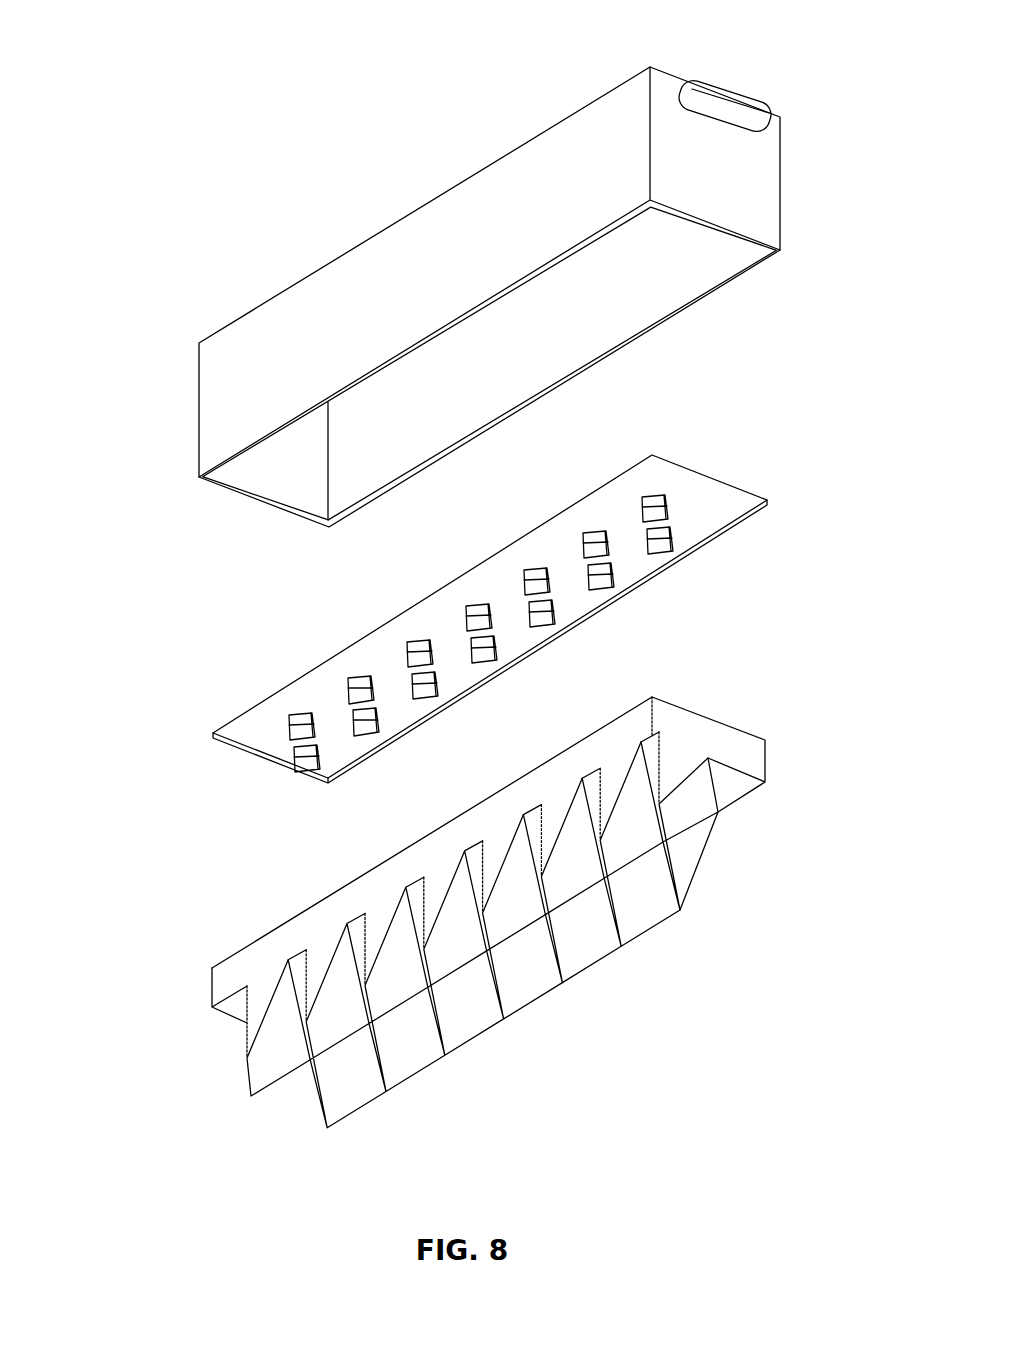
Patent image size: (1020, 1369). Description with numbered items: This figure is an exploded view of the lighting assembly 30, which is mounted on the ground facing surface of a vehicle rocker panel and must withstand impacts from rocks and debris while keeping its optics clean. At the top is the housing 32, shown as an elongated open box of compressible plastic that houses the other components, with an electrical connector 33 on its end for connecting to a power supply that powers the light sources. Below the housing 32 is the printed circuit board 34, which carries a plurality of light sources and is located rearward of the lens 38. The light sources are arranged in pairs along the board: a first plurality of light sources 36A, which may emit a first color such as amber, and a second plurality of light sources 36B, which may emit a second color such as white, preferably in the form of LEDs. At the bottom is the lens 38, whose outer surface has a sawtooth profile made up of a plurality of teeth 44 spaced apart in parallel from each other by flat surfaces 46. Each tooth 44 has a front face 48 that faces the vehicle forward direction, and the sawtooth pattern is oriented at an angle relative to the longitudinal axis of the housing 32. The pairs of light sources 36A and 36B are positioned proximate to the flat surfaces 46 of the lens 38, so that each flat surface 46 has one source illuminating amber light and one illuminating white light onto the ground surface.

The lighting assembly 30 is at (163, 247).
The housing 32 is at (750, 177).
The electrical connector 33 is at (727, 98).
The printed circuit board 34 is at (723, 490).
The first plurality of light sources 36A is at (487, 657).
The second plurality of light sources 36B is at (477, 608).
The lens 38 is at (727, 743).
The teeth 44 is at (622, 922).
The flat surfaces 46 is at (532, 815).
The front face 48 is at (682, 848).